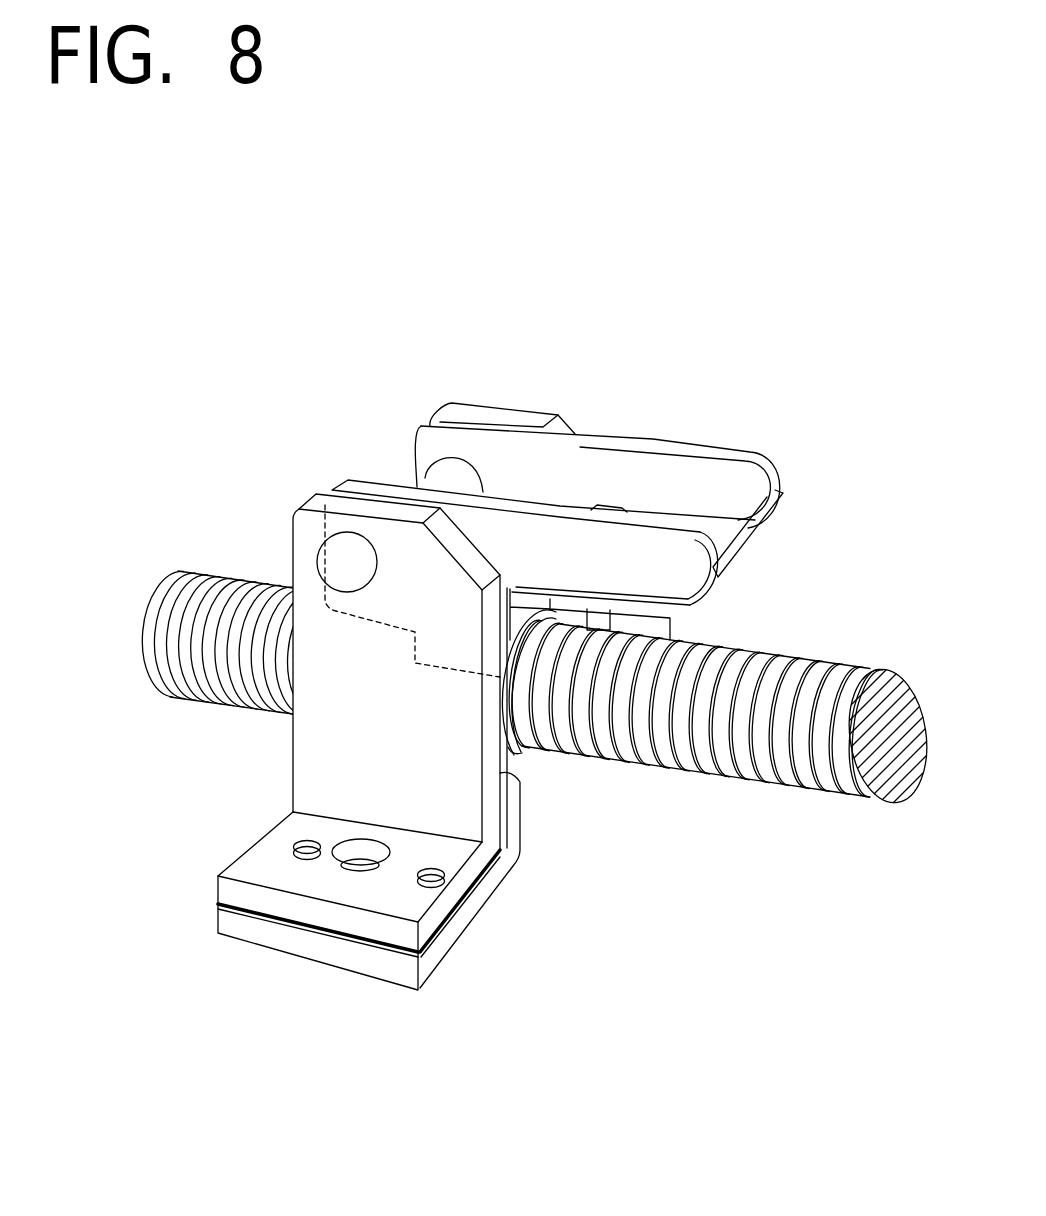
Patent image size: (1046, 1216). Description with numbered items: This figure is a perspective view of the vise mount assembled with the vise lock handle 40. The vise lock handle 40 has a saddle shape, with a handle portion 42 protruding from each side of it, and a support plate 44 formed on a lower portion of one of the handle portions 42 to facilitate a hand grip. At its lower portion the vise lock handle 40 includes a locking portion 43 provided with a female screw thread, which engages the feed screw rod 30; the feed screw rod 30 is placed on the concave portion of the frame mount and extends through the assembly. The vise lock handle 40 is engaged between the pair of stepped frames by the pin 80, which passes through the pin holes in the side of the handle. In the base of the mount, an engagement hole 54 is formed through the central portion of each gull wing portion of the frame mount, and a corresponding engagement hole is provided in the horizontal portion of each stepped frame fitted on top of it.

The feed screw rod 30 is at (208, 682).
The vise lock handle 40 is at (595, 466).
The handle portion 42 is at (740, 482).
The locking portion 43 is at (510, 623).
The support plate 44 is at (758, 534).
The engagement hole 54 is at (340, 849).
The pin 80 is at (340, 552).